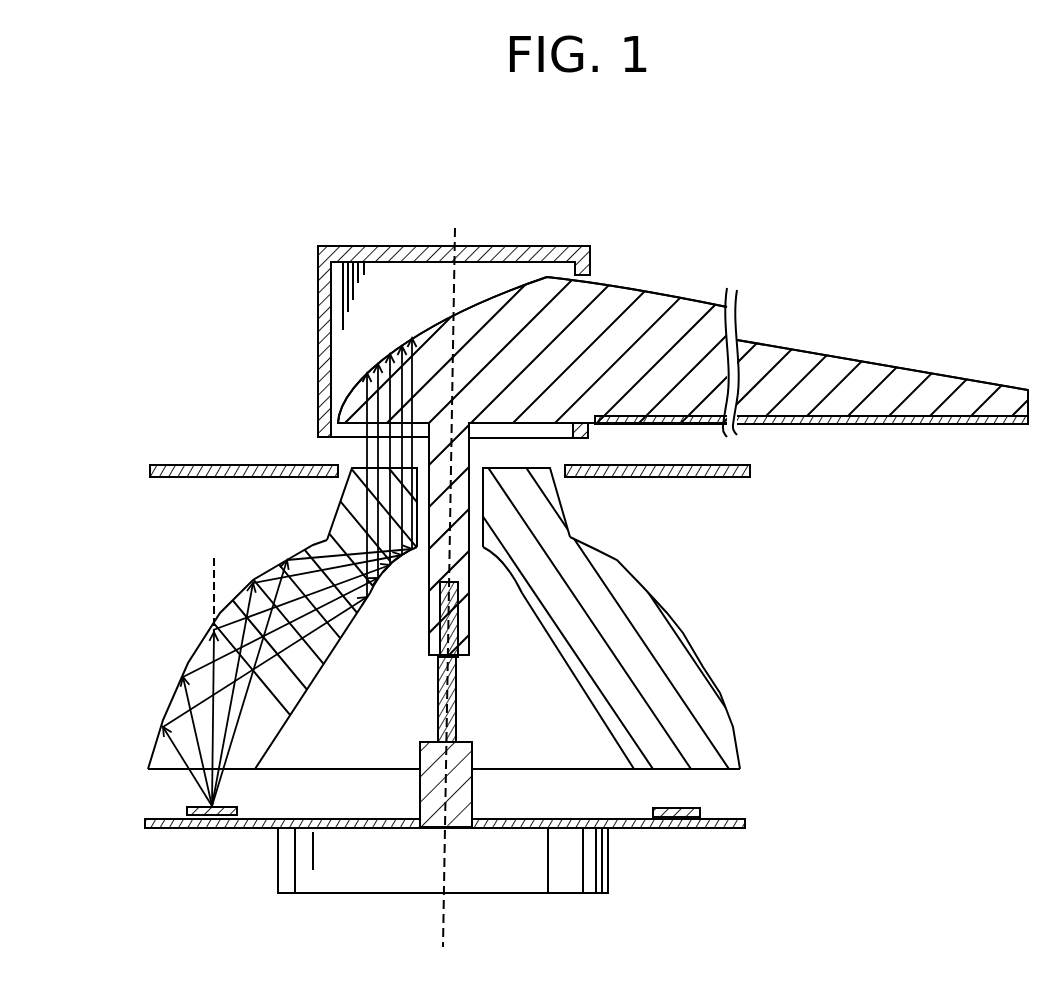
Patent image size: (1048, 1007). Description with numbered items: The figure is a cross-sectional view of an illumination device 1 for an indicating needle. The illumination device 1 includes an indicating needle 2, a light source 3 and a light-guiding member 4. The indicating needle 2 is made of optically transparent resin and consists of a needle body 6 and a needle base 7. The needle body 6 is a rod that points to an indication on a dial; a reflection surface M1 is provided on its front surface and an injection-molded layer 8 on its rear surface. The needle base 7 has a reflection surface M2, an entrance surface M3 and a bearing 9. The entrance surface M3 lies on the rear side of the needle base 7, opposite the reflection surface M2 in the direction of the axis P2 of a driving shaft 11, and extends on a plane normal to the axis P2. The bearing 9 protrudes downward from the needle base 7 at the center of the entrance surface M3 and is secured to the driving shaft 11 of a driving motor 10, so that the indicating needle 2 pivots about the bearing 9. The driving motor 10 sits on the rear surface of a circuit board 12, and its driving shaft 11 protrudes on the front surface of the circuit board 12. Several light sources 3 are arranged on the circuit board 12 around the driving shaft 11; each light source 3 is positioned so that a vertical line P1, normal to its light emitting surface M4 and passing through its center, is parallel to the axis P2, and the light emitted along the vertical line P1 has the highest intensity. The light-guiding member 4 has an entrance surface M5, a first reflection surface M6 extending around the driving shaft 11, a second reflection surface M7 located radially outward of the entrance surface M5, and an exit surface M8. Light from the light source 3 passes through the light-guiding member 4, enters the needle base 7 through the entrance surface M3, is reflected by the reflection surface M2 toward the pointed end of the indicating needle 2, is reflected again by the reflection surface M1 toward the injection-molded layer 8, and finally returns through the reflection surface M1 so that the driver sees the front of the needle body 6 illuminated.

The illumination device 1 is at (804, 256).
The indicating needle 2 is at (689, 295).
The light source 3 is at (188, 810).
The light-guiding member 4 is at (508, 620).
The needle body 6 is at (902, 384).
The needle base 7 is at (490, 307).
The injection-molded layer 8 is at (914, 427).
The bearing 9 is at (459, 640).
The driving motor 10 is at (610, 873).
The driving shaft 11 is at (457, 712).
The circuit board 12 is at (720, 829).
The reflection surface M1 is at (645, 287).
The reflection surface M2 is at (413, 320).
The entrance surface M3 is at (531, 442).
The light emitting surface M4 is at (208, 804).
The entrance surface M5 is at (148, 769).
The first reflection surface M6 is at (369, 600).
The second reflection surface M7 is at (160, 713).
The exit surface M8 is at (360, 463).
The vertical line P1 is at (214, 573).
The axis P2 is at (445, 912).